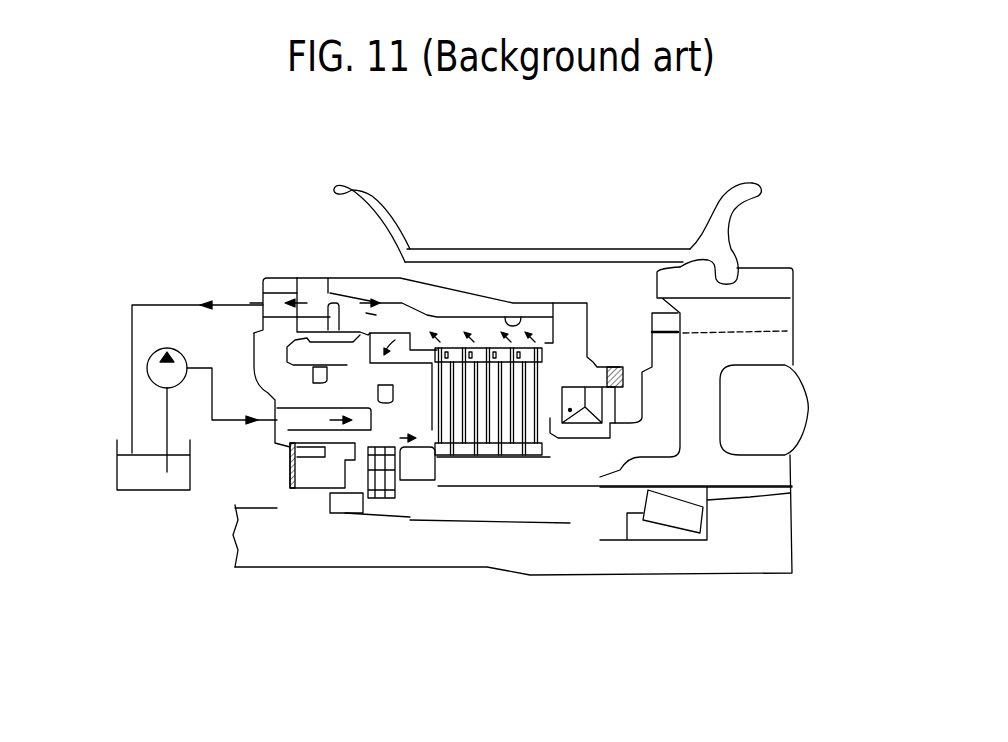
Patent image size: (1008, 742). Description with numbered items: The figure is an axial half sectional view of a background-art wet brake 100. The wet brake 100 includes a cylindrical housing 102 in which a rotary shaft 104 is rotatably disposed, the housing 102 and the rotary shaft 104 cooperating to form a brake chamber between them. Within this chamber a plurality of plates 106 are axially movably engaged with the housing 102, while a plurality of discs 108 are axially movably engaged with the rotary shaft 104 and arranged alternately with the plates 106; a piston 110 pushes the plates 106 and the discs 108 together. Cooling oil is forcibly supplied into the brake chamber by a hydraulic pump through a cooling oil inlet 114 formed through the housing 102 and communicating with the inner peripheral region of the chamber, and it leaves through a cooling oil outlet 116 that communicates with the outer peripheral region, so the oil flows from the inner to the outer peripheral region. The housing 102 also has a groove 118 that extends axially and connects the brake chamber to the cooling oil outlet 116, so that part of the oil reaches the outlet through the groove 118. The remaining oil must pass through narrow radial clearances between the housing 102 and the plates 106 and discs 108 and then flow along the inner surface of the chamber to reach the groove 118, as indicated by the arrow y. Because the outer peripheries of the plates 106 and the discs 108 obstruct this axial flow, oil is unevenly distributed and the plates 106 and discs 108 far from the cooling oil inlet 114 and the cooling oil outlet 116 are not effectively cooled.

The wet brake 100 is at (293, 172).
The housing 102 is at (439, 281).
The rotary shaft 104 is at (483, 473).
The plates 106 is at (440, 443).
The discs 108 is at (445, 438).
The piston 110 is at (341, 353).
The cooling oil inlet 114 is at (302, 421).
The cooling oil outlet 116 is at (275, 297).
The groove 118 is at (513, 318).
The arrow y is at (413, 350).